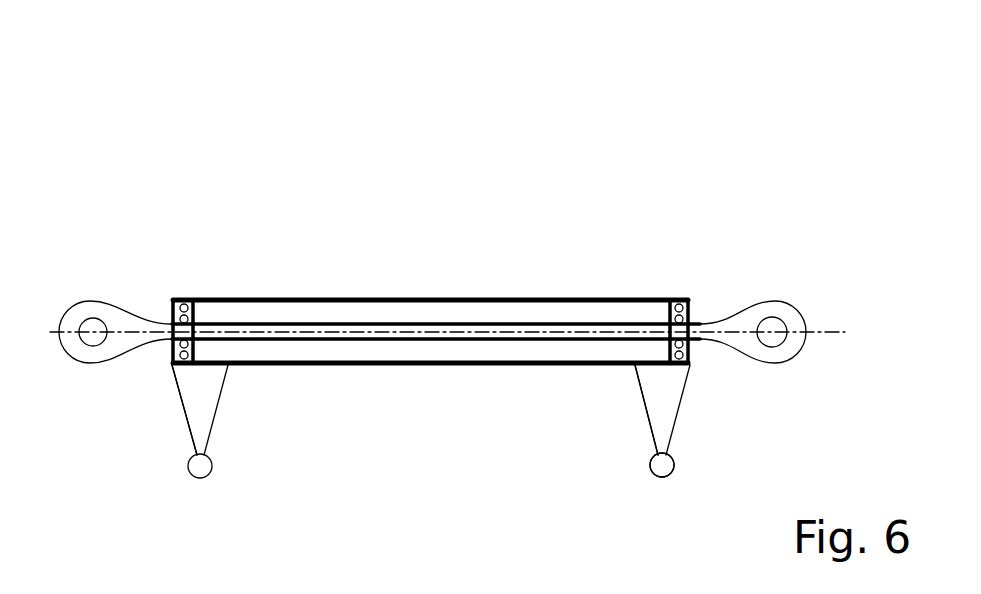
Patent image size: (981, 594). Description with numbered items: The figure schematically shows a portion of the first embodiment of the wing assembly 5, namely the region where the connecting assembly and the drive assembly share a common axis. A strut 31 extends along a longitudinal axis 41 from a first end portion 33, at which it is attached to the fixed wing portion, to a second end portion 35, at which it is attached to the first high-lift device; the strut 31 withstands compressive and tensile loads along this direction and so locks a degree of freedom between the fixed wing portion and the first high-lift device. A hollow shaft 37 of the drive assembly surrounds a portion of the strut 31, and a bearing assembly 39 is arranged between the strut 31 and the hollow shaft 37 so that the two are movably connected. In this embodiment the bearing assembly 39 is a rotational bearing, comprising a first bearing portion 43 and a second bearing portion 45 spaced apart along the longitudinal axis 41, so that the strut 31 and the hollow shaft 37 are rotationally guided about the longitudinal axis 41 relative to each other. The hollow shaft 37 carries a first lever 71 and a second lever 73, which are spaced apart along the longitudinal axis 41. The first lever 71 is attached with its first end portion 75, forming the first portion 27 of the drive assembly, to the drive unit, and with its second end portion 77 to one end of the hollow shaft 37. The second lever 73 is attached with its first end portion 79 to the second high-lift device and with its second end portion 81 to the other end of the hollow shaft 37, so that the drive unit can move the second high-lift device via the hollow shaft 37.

The wing assembly 5 is at (435, 133).
The first portion 27 is at (667, 463).
The strut 31 is at (393, 323).
The first end portion 33 is at (753, 307).
The second end portion 35 is at (100, 306).
The hollow shaft 37 is at (502, 300).
The bearing assembly 39 is at (193, 223).
The longitudinal axis 41 is at (845, 332).
The first bearing portion 43 is at (663, 308).
The second bearing portion 45 is at (195, 315).
The first lever 71 is at (675, 420).
The second lever 73 is at (213, 422).
The first end portion 75 is at (662, 465).
The second end portion 77 is at (675, 377).
The first end portion 79 is at (207, 468).
The second end portion 81 is at (215, 380).